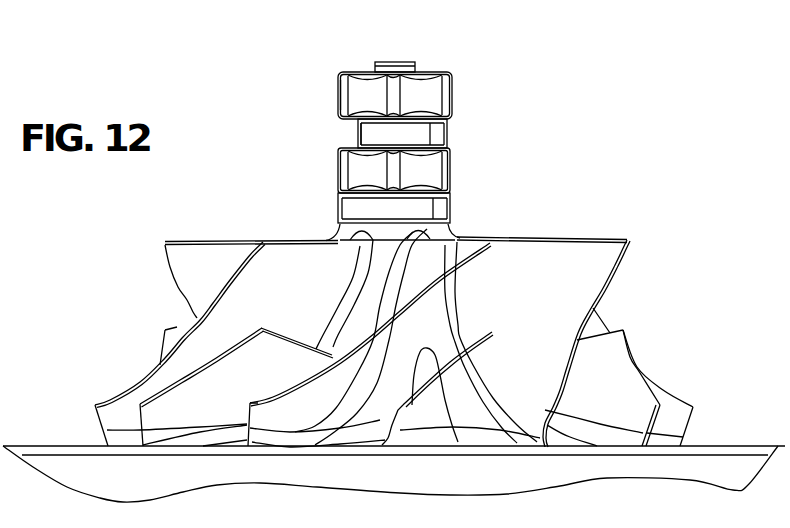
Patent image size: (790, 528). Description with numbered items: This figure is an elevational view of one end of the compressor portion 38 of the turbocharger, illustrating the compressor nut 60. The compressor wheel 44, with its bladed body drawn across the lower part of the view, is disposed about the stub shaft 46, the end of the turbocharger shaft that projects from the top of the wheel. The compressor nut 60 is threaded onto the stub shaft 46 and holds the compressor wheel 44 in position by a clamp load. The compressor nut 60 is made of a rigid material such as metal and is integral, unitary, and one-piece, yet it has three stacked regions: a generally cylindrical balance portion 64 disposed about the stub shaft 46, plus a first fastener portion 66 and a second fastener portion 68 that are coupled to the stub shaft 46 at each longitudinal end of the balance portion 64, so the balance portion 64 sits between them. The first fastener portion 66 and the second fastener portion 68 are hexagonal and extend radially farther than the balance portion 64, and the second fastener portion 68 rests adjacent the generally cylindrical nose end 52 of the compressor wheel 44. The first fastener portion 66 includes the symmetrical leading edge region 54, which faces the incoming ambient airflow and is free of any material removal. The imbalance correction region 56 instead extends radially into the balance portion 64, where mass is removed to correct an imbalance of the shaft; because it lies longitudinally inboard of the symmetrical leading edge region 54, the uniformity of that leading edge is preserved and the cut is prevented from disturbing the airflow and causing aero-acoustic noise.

The compressor portion 38 is at (622, 242).
The compressor wheel 44 is at (205, 324).
The stub shaft 46 is at (395, 61).
The nose end 52 is at (440, 208).
The symmetrical leading edge region 54 is at (337, 95).
The imbalance correction region 56 is at (357, 135).
The compressor nut 60 is at (453, 82).
The balance portion 64 is at (437, 135).
The first fastener portion 66 is at (437, 102).
The second fastener portion 68 is at (437, 175).